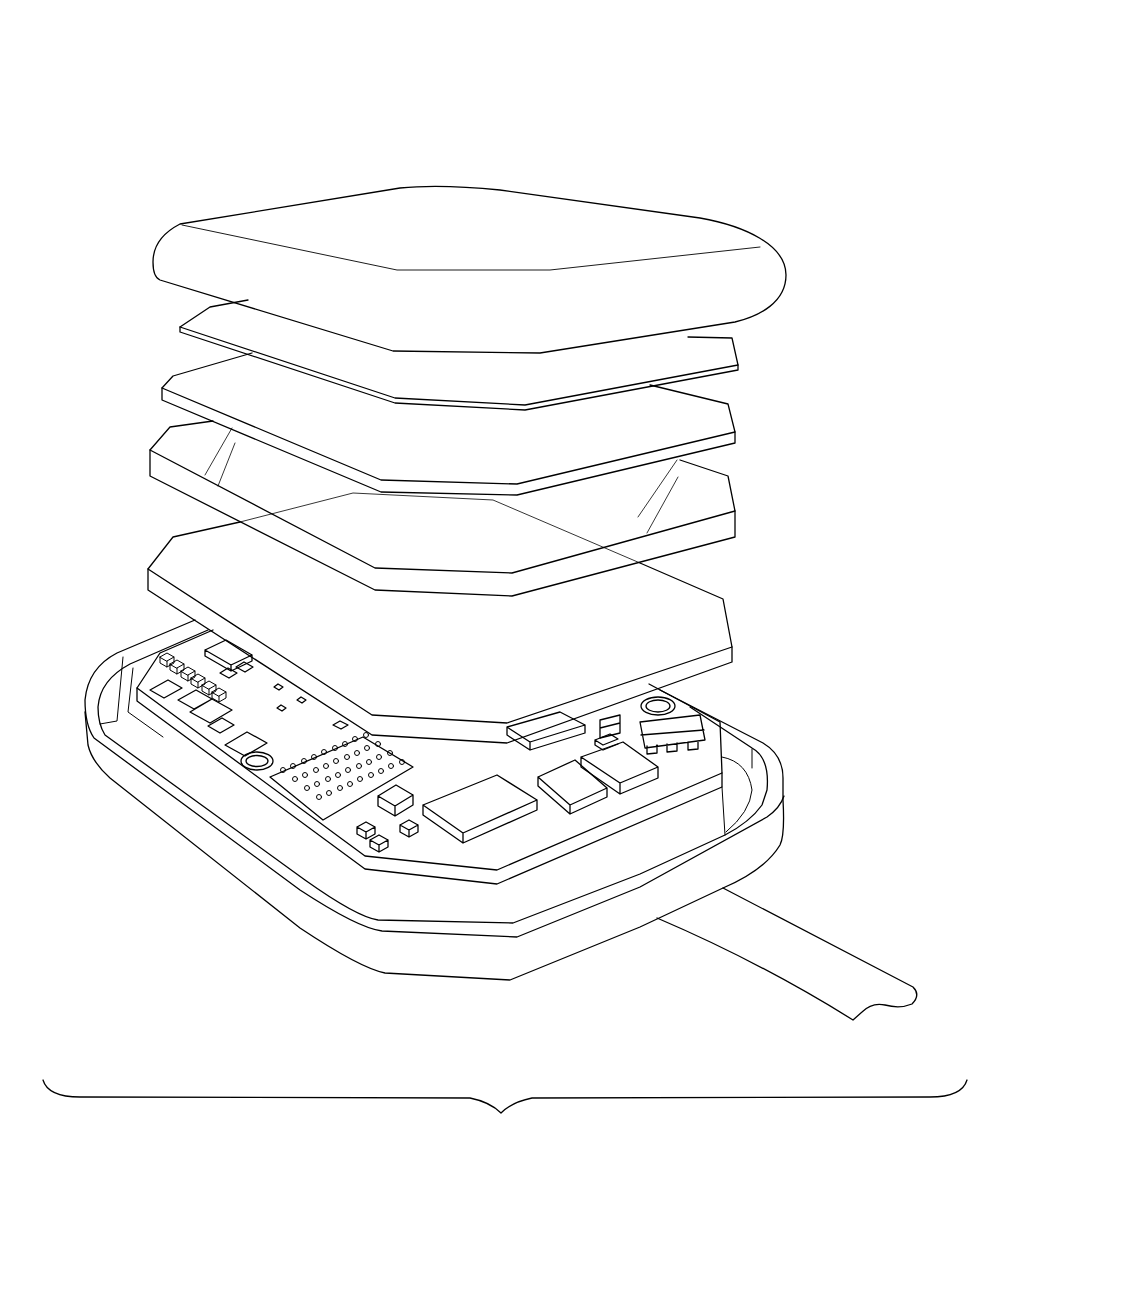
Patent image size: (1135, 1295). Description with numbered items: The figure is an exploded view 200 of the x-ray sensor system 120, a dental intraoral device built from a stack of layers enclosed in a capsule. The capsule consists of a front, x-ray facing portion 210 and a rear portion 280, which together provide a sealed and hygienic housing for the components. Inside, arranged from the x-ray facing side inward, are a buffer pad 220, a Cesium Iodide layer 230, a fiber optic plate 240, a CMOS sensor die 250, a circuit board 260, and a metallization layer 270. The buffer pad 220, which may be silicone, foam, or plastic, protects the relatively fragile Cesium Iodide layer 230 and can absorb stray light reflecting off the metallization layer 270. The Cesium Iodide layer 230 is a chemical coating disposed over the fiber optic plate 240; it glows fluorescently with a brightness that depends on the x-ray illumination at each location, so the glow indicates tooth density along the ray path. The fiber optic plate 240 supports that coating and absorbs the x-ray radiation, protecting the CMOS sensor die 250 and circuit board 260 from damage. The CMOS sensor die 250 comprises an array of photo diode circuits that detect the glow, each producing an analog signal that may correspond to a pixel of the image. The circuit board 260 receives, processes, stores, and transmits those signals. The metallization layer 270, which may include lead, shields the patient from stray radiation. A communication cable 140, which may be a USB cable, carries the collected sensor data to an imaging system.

The exploded view 200 is at (710, 90).
The x-ray sensor system 120 is at (332, 190).
The front portion 210 is at (760, 271).
The buffer pad 220 is at (718, 352).
The Cesium Iodide layer 230 is at (718, 421).
The fiber optic plate 240 is at (718, 504).
The CMOS sensor die 250 is at (718, 619).
The circuit board 260 is at (338, 832).
The metallization layer 270 is at (697, 818).
The rear portion 280 is at (414, 947).
The communication cable 140 is at (790, 938).